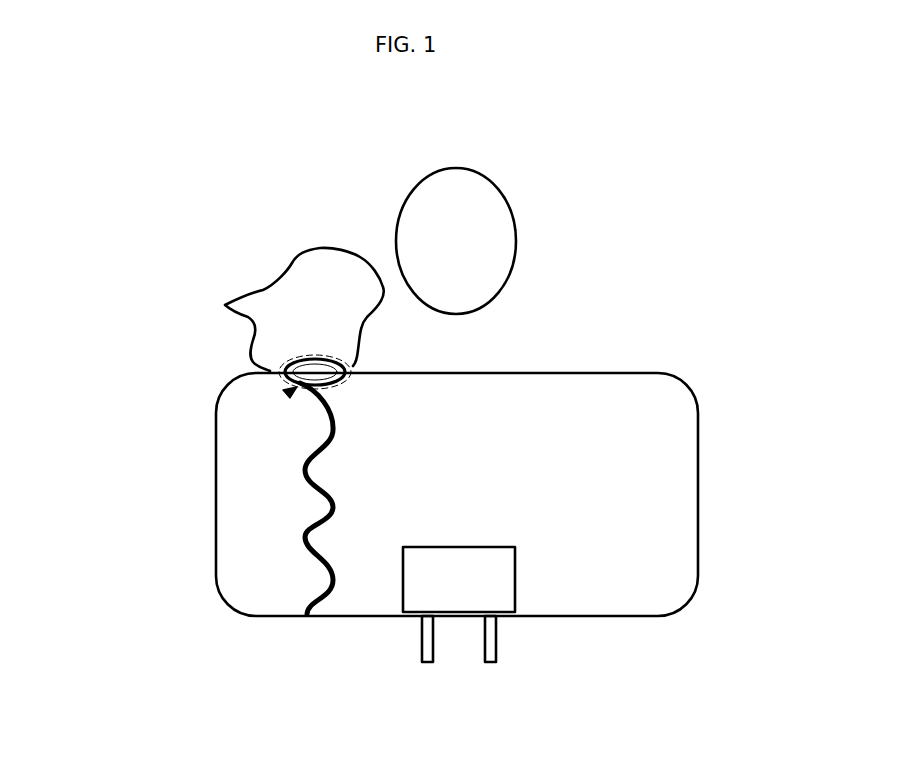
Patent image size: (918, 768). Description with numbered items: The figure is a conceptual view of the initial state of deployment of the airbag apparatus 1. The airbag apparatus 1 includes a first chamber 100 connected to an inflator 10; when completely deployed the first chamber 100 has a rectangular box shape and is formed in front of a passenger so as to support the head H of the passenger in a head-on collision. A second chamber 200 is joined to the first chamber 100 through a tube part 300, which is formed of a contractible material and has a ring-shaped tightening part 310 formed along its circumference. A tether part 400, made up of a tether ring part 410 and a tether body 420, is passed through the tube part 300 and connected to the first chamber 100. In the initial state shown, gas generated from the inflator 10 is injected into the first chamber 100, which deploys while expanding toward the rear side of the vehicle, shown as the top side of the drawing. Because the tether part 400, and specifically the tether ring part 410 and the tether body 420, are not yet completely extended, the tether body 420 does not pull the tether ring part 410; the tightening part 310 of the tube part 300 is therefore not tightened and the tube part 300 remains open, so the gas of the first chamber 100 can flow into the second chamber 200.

The airbag apparatus 1 is at (710, 273).
The inflator 10 is at (505, 582).
The first chamber 100 is at (257, 593).
The second chamber 200 is at (276, 311).
The tube part 300 is at (283, 380).
The tightening part 310 is at (346, 378).
The tether part 400 is at (130, 574).
The tether ring part 410 is at (289, 394).
The tether body 420 is at (305, 475).
The head H is at (485, 205).